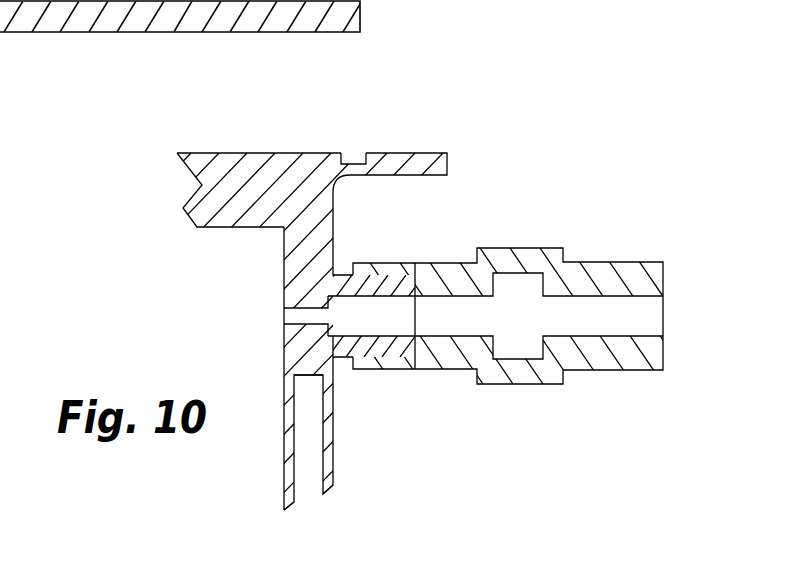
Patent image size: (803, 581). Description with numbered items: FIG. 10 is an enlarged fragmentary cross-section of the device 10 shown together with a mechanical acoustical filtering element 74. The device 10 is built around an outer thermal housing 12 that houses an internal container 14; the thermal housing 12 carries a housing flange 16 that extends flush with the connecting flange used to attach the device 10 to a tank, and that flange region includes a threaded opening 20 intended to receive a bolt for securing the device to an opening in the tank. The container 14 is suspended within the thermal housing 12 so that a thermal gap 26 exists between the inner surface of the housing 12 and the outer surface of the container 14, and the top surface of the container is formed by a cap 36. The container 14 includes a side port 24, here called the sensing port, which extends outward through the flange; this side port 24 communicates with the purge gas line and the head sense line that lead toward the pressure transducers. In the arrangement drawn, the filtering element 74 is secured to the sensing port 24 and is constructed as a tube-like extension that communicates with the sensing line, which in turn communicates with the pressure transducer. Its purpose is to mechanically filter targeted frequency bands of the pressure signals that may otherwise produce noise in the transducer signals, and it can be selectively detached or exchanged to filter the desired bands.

The device 10 is at (470, 127).
The thermal housing 12 is at (333, 447).
The container 14 is at (296, 424).
The housing flange 16 is at (410, 177).
The threaded opening 20 is at (355, 153).
The side port 24 is at (370, 310).
The thermal gap 26 is at (307, 473).
The cap 36 is at (203, 152).
The filtering element 74 is at (619, 222).